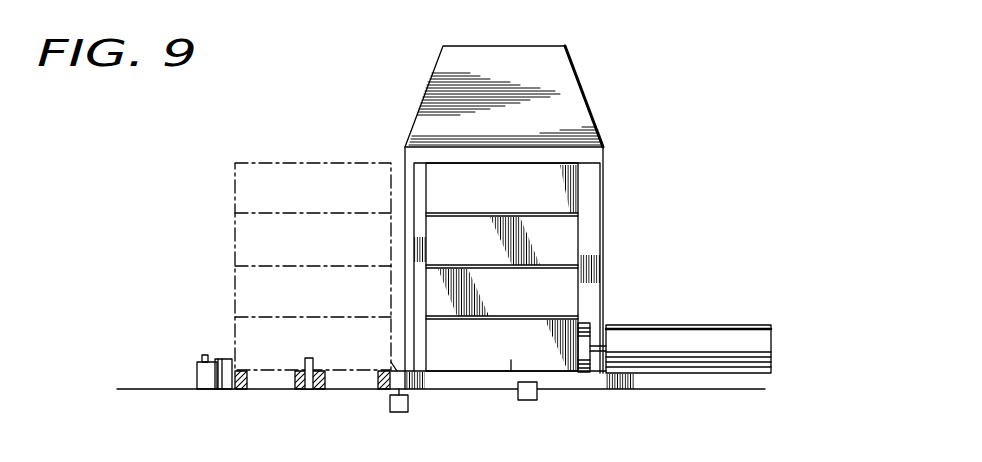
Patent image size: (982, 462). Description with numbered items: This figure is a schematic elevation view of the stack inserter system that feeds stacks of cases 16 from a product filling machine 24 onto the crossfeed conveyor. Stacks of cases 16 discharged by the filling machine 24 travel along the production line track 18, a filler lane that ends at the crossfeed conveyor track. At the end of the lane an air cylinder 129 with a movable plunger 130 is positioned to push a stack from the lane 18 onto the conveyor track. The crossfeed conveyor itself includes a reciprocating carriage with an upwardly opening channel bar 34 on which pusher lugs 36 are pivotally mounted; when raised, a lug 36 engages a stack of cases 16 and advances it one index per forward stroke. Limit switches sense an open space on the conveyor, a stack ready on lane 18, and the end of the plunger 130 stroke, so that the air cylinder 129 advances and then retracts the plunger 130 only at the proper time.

The cases 16 is at (234, 238).
The product filling machine 24 is at (596, 172).
The channel bar 34 is at (322, 390).
The pusher lug 36 is at (308, 357).
The production line track 18 is at (463, 384).
The plunger 130 is at (586, 322).
The air cylinder 129 is at (667, 333).